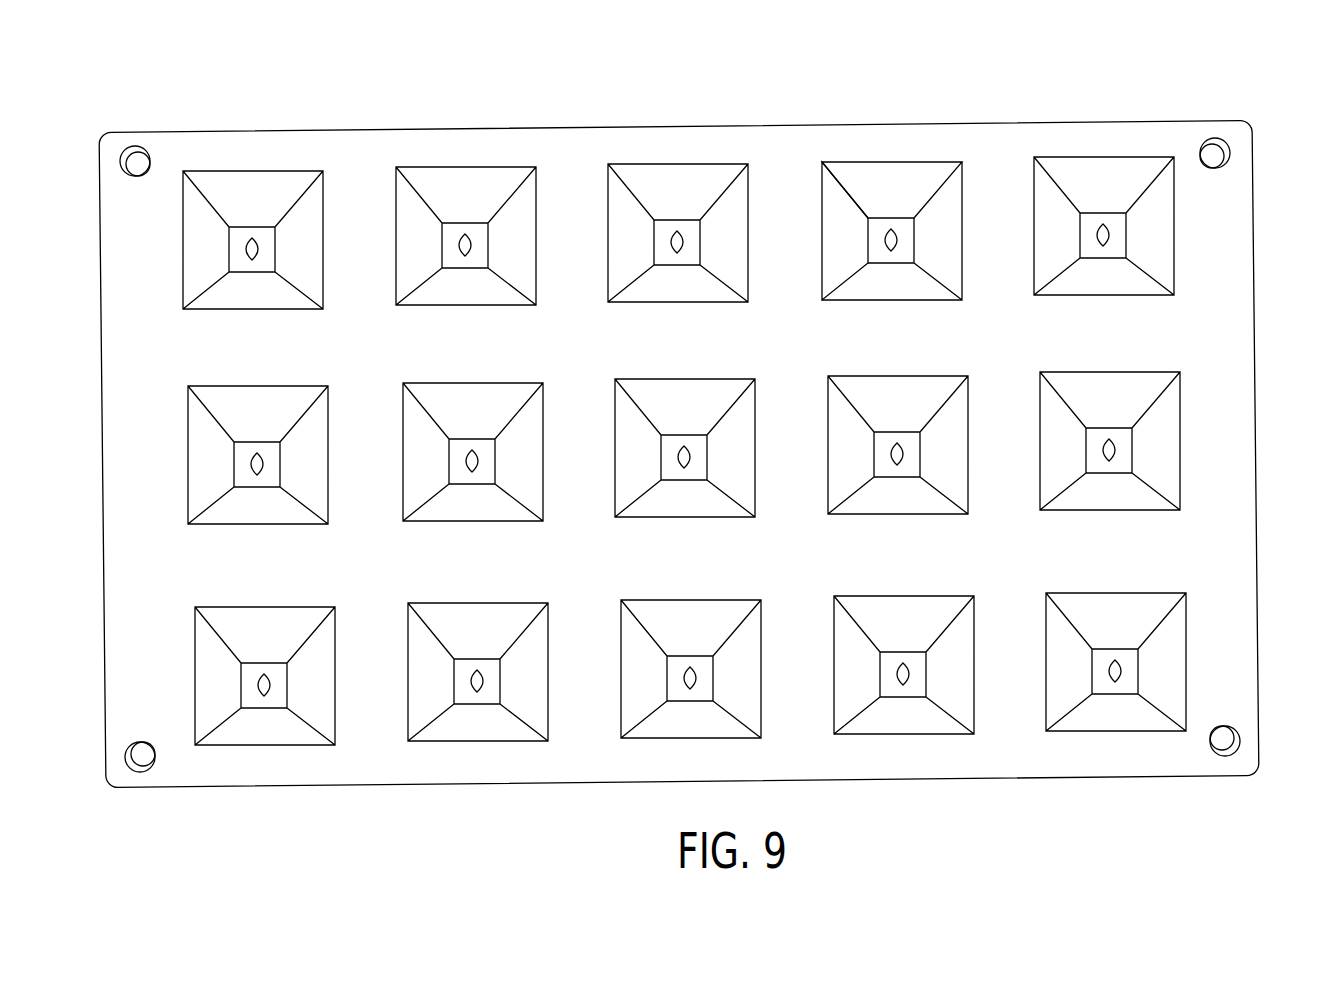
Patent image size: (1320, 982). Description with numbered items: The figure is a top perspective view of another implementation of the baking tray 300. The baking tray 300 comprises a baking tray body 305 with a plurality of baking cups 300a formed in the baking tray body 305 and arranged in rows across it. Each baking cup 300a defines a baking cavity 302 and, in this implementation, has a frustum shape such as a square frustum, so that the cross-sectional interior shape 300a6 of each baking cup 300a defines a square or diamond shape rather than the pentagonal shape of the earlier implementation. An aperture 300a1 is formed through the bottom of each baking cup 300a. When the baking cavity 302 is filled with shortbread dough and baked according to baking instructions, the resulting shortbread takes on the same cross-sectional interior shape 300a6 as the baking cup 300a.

The baking tray 300 is at (702, 394).
The baking cavity 302 is at (862, 176).
The baking cup 300a is at (893, 177).
The aperture 300a1 is at (895, 231).
The cross-sectional interior shape 300a6 is at (820, 198).
The baking tray body 305 is at (1210, 653).